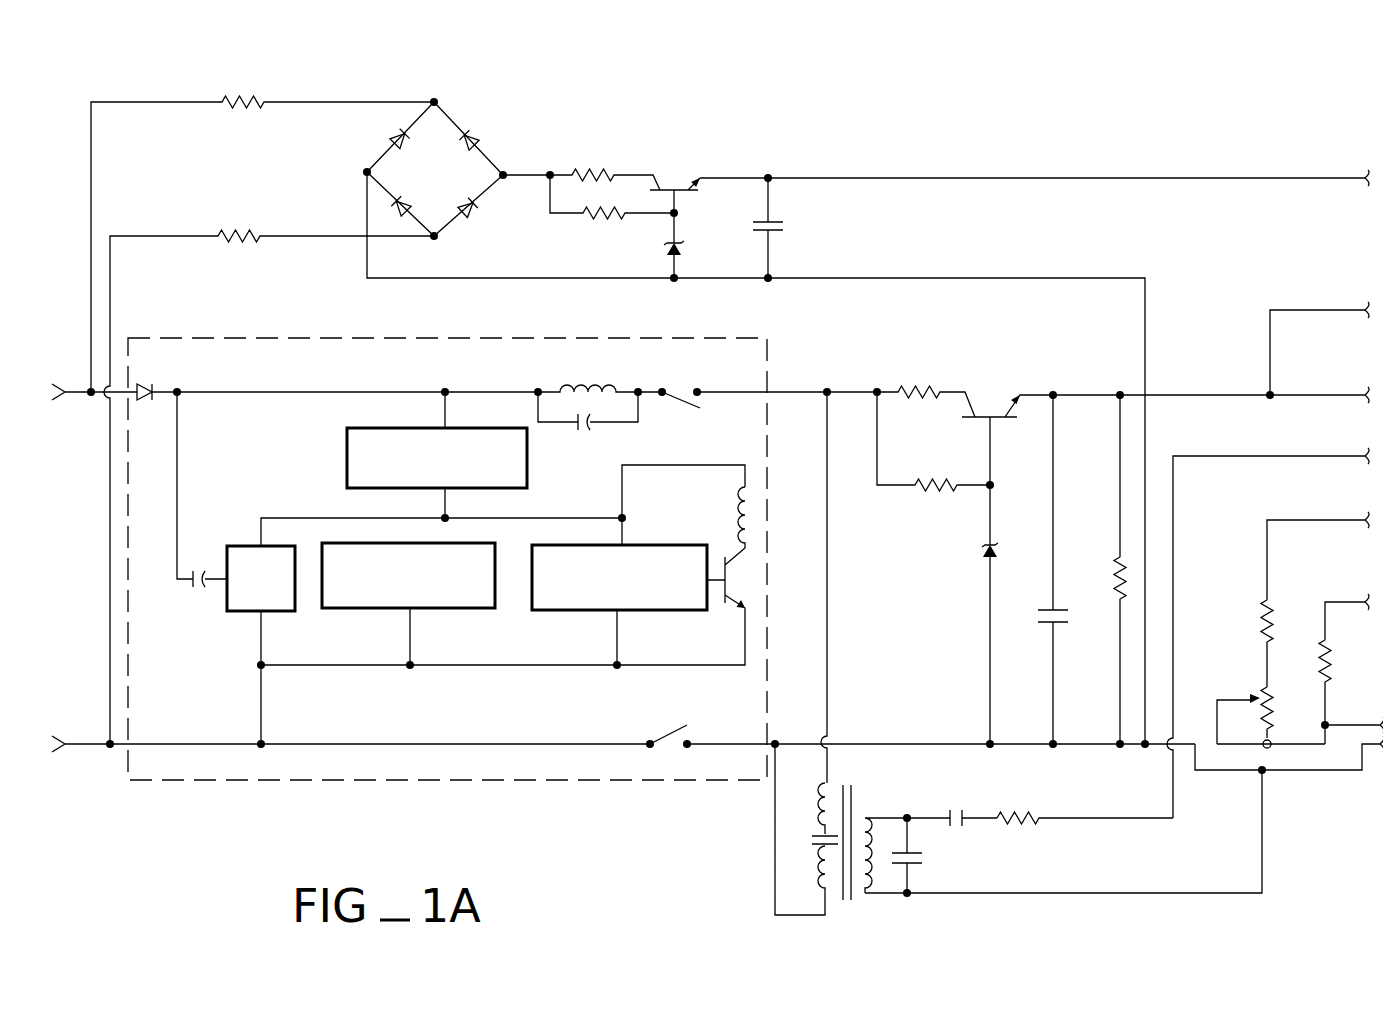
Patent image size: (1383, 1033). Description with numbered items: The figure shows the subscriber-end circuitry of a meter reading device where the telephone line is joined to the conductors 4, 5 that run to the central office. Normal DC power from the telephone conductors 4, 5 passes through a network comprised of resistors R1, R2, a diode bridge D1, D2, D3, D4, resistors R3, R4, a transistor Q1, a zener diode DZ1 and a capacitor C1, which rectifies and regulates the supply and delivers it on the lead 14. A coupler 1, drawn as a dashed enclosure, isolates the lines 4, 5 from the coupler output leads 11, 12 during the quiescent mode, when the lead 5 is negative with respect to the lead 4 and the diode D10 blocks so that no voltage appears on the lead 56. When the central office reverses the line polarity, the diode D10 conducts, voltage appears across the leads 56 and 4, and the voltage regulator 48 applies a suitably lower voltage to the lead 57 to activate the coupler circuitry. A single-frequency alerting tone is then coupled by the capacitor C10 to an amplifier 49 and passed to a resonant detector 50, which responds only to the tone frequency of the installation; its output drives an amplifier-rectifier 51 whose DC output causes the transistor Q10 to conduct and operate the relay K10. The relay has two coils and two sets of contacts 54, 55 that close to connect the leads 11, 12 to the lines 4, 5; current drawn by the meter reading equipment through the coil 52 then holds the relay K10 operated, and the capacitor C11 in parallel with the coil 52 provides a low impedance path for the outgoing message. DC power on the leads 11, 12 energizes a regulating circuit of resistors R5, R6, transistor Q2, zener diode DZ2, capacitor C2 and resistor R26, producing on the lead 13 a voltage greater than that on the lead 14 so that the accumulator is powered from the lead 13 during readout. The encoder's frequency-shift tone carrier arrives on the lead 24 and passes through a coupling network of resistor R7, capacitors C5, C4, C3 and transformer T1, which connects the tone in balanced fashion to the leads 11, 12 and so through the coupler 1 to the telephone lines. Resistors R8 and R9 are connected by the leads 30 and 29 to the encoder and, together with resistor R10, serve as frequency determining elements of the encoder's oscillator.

The coupler 1 is at (728, 338).
The telephone line conductor 4 is at (82, 752).
The telephone line conductor 5 is at (82, 380).
The coupler output lead 11 is at (800, 392).
The coupler output lead 12 is at (847, 744).
The lead 13 is at (1297, 310).
The lead 14 is at (1240, 178).
The lead 24 is at (1262, 456).
The lead 29 is at (1350, 602).
The lead 30 is at (1320, 522).
The voltage regulator 48 is at (346, 455).
The amplifier 49 is at (222, 614).
The resonant detector 50 is at (478, 612).
The amplifier-rectifier 51 is at (683, 612).
The relay coil 52 is at (590, 386).
The relay contacts 54 is at (684, 387).
The relay contacts 55 is at (668, 749).
The lead 56 is at (300, 392).
The lead 57 is at (328, 516).
The resistor R1 is at (240, 96).
The resistor R2 is at (237, 232).
The resistor R3 is at (584, 170).
The resistor R4 is at (603, 219).
The resistor R5 is at (920, 391).
The resistor R6 is at (930, 483).
The resistor R7 is at (1010, 814).
The resistor R8 is at (1258, 618).
The resistor R9 is at (1250, 695).
The resistor R10 is at (1318, 680).
The resistor R26 is at (1115, 572).
The capacitor C1 is at (790, 226).
The capacitor C2 is at (1035, 615).
The capacitor C3 is at (812, 838).
The capacitor C4 is at (928, 860).
The capacitor C5 is at (953, 806).
The capacitor C10 is at (200, 560).
The capacitor C11 is at (583, 450).
The rectifier diode D1 is at (468, 128).
The rectifier diode D2 is at (393, 134).
The rectifier diode D3 is at (400, 196).
The rectifier diode D4 is at (470, 216).
The diode D10 is at (142, 376).
The zener diode DZ1 is at (690, 246).
The zener diode DZ2 is at (975, 547).
The transistor Q1 is at (676, 180).
The transistor Q2 is at (997, 397).
The transistor Q10 is at (738, 582).
The relay K10 is at (738, 512).
The transformer T1 is at (843, 910).